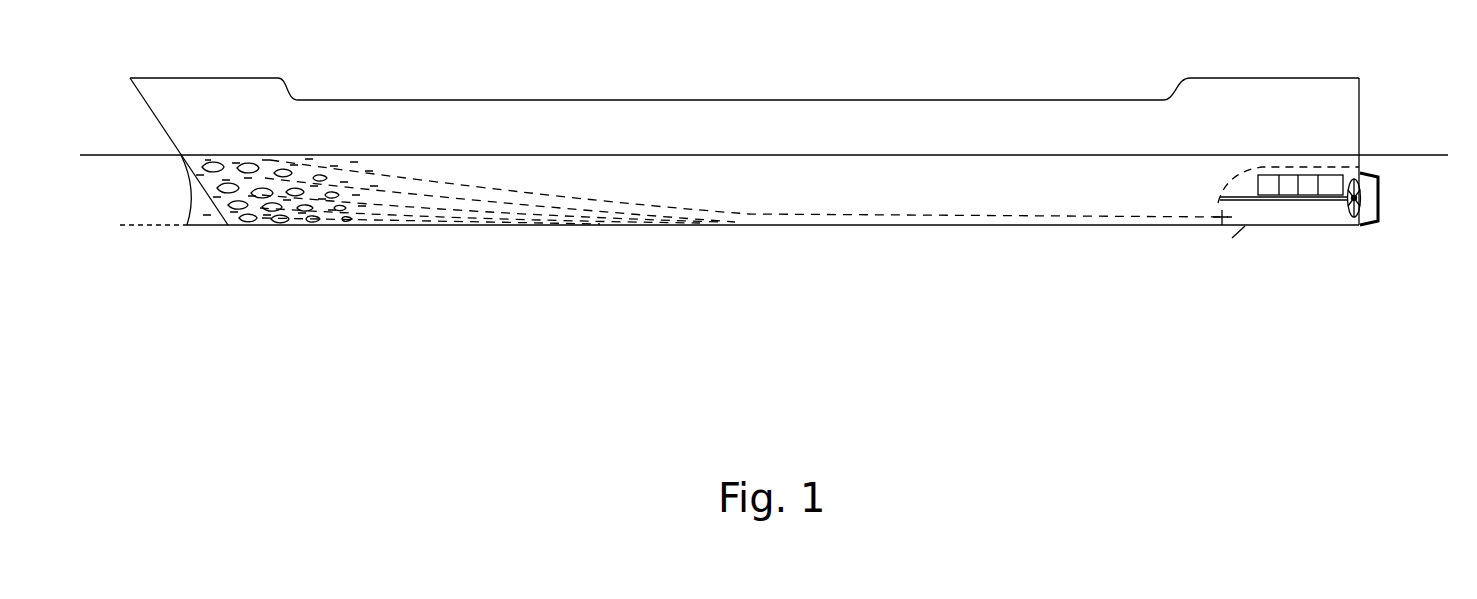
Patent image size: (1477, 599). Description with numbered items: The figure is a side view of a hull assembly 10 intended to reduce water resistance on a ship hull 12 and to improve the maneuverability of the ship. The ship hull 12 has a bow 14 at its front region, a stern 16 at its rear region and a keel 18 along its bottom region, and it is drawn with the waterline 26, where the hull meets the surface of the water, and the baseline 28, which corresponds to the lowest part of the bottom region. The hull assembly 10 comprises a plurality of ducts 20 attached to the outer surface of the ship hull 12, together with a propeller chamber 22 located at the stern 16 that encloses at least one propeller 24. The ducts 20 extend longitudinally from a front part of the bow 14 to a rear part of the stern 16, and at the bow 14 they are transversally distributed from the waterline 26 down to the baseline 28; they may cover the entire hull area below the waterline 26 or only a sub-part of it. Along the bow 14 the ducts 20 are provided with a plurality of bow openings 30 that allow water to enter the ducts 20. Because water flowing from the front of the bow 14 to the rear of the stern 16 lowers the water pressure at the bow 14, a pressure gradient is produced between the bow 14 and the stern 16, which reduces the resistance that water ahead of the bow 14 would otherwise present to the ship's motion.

The hull assembly 10 is at (437, 296).
The ship hull 12 is at (679, 98).
The bow 14 is at (224, 241).
The stern 16 is at (1280, 255).
The keel 18 is at (710, 227).
The ducts 20 is at (378, 184).
The propeller chamber 22 is at (1313, 209).
The propeller 24 is at (1368, 198).
The waterline 26 is at (99, 158).
The baseline 28 is at (135, 232).
The bow openings 30 is at (273, 170).